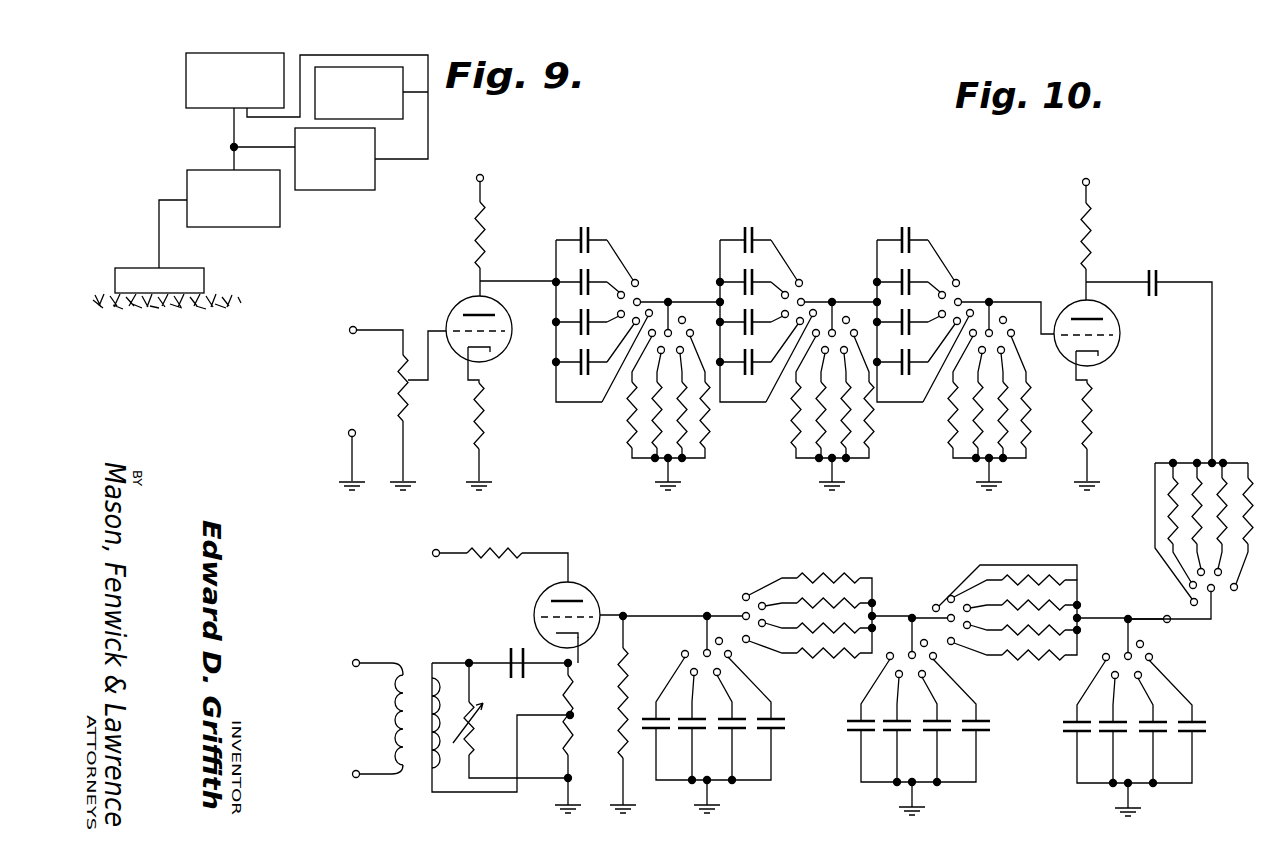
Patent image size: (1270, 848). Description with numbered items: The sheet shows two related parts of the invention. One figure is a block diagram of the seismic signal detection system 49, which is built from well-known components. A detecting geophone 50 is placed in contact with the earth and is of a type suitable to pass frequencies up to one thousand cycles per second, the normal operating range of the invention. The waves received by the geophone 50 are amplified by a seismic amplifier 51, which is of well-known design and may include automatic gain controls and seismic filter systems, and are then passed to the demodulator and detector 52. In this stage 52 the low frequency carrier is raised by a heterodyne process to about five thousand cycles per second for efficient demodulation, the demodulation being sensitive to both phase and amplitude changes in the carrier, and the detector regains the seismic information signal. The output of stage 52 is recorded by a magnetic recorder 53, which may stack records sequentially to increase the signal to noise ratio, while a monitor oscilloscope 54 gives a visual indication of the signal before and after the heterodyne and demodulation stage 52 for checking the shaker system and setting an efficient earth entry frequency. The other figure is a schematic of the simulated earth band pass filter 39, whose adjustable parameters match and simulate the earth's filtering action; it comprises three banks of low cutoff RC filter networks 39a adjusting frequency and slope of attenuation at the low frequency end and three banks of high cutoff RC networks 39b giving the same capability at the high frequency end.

In FIG. 10, the band pass filter 39 is at (791, 496).
In FIG. 10, the low cutoff RC filter networks 39a is at (678, 281).
In FIG. 10, the high cutoff RC networks 39b is at (703, 606).
In FIG. 9, the seismic signal detection system 49 is at (260, 181).
In FIG. 9, the geophone 50 is at (204, 281).
In FIG. 9, the seismic amplifier 51 is at (187, 179).
In FIG. 9, the demodulator and detector 52 is at (375, 178).
In FIG. 9, the magnetic recorder 53 is at (396, 119).
In FIG. 9, the monitor oscilloscope 54 is at (186, 93).